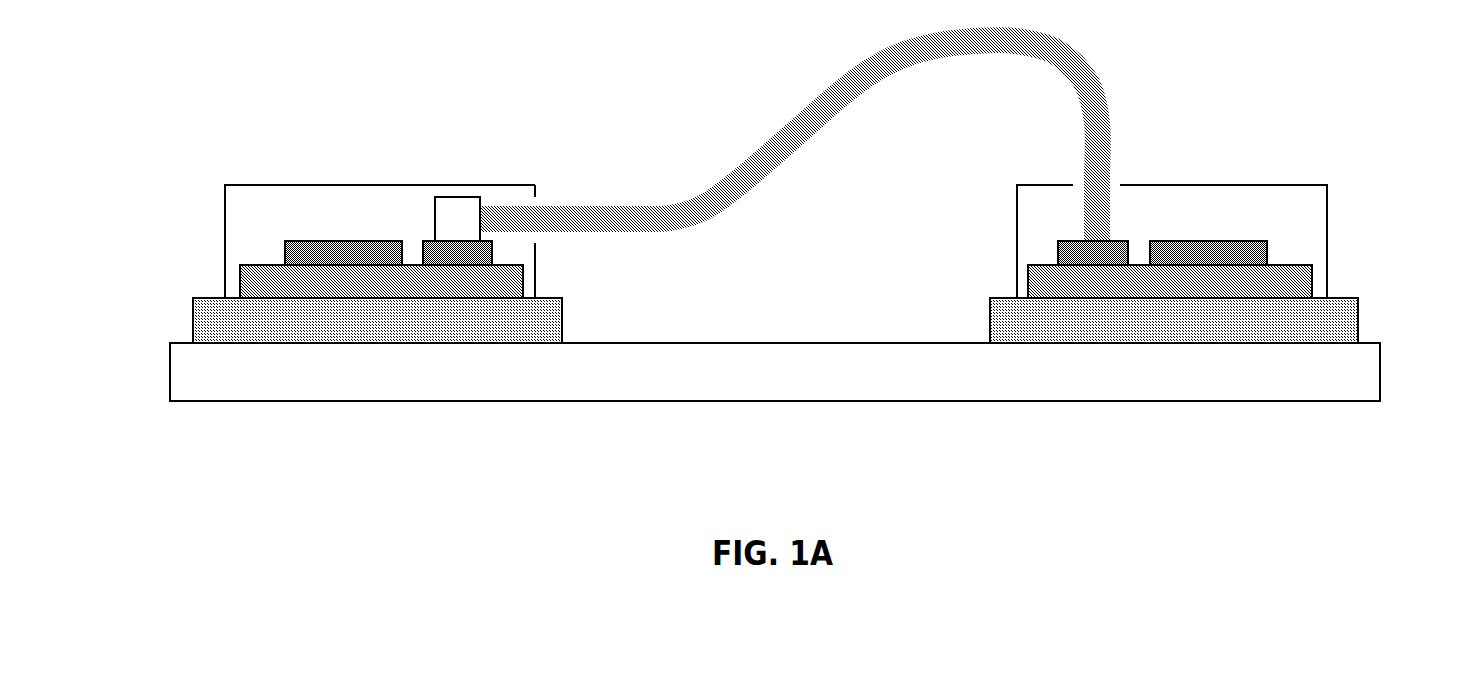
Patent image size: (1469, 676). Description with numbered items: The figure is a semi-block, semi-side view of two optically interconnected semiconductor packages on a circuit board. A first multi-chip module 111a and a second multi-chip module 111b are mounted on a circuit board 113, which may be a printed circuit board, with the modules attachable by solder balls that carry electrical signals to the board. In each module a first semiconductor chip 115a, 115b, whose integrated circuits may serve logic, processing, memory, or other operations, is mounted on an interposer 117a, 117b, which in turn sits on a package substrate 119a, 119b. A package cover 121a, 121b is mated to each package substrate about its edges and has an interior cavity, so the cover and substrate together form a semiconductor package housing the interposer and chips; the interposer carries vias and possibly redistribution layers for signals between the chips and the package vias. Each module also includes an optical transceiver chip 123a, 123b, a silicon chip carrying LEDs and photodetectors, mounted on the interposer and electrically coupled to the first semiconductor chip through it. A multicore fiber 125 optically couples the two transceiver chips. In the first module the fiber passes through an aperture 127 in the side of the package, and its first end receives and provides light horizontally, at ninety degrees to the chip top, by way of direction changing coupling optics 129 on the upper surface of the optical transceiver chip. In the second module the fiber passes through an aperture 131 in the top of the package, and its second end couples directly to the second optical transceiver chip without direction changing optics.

The first multi-chip module 111a is at (365, 191).
The second multi-chip module 111b is at (1178, 198).
The circuit board 113 is at (170, 388).
The first semiconductor chip 115a is at (345, 241).
The first semiconductor chip 115b is at (1220, 240).
The interposer 117a is at (240, 272).
The interposer 117b is at (1312, 283).
The package substrate 119a is at (193, 325).
The package substrate 119b is at (1358, 330).
The package cover 121a is at (362, 213).
The package cover 121b is at (1213, 203).
The optical transceiver chip 123a is at (492, 252).
The optical transceiver chip 123b is at (1058, 247).
The multicore fiber 125 is at (822, 102).
The aperture 127 is at (545, 197).
The direction changing coupling optics 129 is at (459, 197).
The aperture 131 is at (1075, 173).